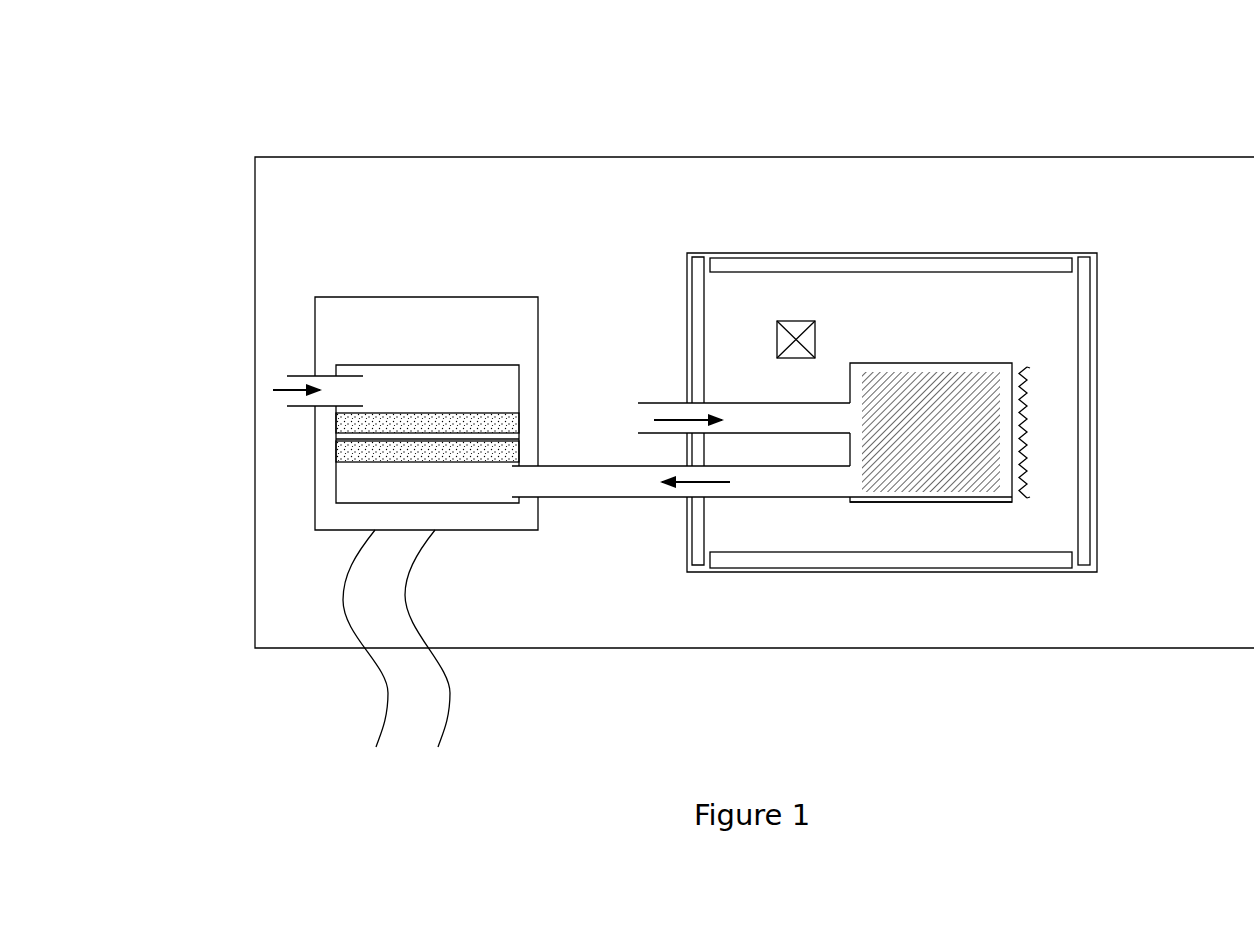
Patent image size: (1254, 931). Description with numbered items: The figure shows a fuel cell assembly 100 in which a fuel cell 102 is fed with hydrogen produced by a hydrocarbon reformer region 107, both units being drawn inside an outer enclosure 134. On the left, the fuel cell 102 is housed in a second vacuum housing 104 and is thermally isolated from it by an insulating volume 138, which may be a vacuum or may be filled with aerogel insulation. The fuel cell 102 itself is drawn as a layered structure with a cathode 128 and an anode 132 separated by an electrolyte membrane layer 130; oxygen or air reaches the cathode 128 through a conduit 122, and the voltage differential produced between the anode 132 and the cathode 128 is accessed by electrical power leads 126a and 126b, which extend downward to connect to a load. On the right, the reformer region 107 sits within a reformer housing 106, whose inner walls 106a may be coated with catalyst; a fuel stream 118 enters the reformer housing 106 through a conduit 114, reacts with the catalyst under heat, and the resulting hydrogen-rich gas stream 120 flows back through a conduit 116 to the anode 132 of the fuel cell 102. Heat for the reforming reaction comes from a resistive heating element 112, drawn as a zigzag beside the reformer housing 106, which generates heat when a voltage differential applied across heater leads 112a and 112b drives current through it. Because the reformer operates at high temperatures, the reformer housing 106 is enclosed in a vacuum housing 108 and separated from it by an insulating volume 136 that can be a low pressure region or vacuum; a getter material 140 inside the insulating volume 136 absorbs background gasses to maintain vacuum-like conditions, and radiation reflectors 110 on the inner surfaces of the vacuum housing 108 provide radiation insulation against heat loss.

The fuel cell assembly 100 is at (318, 108).
The fuel cell 102 is at (432, 365).
The second vacuum housing 104 is at (443, 297).
The reformer housing 106 is at (949, 408).
The inner walls 106a is at (890, 500).
The hydrocarbon reformer region 107 is at (985, 377).
The vacuum housing 108 is at (898, 253).
The radiation reflectors 110 is at (703, 287).
The resistive heating element 112 is at (1025, 420).
The heater lead 112a is at (1027, 367).
The heater lead 112b is at (1027, 498).
The conduit 114 is at (787, 415).
The conduit 116 is at (788, 485).
The fuel stream 118 is at (684, 420).
The hydrogen-rich gas stream 120 is at (687, 482).
The conduit 122 is at (296, 388).
The electrical power lead 126a is at (385, 722).
The electrical power lead 126b is at (450, 708).
The cathode 128 is at (432, 413).
The electrolyte membrane layer 130 is at (520, 437).
The anode 132 is at (430, 462).
The enclosure 134 is at (928, 157).
The insulating volume 136 is at (992, 300).
The insulating volume 138 is at (488, 328).
The getter material 140 is at (815, 340).